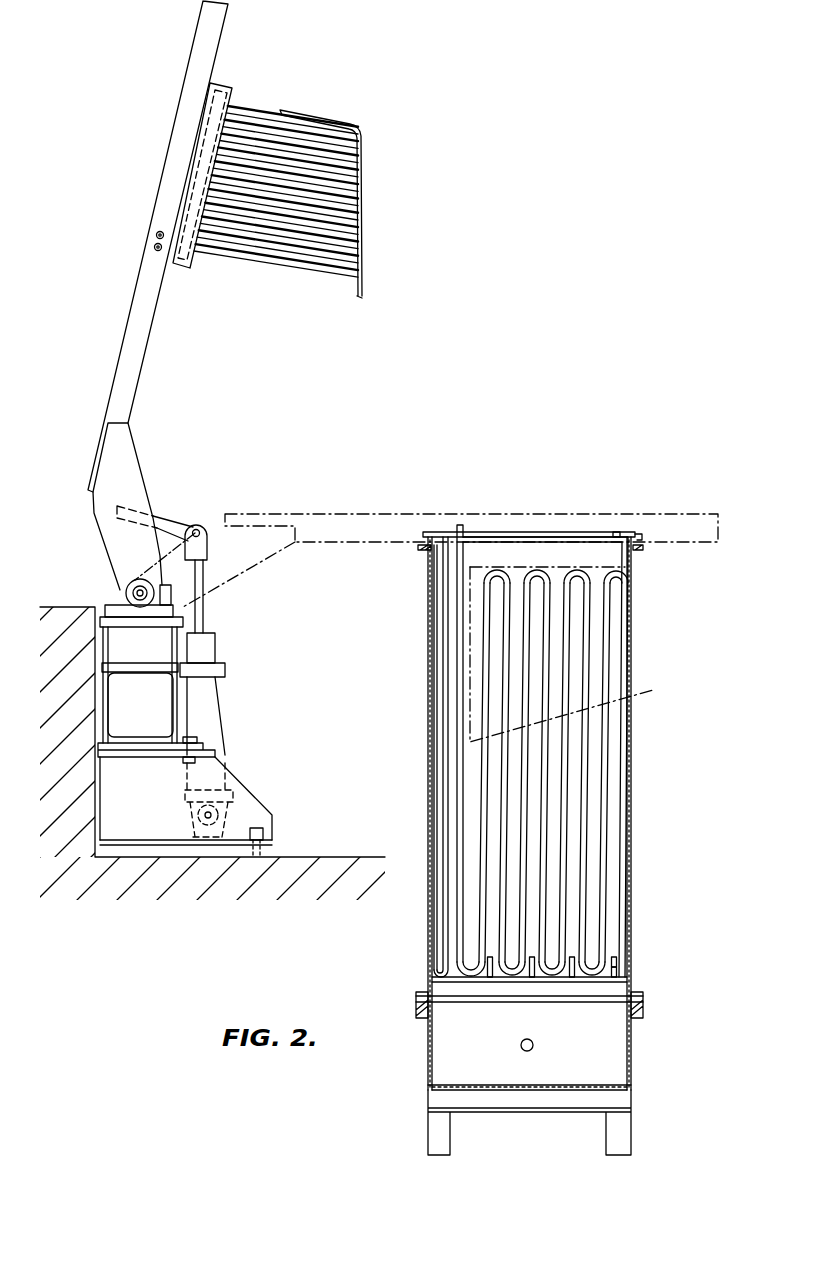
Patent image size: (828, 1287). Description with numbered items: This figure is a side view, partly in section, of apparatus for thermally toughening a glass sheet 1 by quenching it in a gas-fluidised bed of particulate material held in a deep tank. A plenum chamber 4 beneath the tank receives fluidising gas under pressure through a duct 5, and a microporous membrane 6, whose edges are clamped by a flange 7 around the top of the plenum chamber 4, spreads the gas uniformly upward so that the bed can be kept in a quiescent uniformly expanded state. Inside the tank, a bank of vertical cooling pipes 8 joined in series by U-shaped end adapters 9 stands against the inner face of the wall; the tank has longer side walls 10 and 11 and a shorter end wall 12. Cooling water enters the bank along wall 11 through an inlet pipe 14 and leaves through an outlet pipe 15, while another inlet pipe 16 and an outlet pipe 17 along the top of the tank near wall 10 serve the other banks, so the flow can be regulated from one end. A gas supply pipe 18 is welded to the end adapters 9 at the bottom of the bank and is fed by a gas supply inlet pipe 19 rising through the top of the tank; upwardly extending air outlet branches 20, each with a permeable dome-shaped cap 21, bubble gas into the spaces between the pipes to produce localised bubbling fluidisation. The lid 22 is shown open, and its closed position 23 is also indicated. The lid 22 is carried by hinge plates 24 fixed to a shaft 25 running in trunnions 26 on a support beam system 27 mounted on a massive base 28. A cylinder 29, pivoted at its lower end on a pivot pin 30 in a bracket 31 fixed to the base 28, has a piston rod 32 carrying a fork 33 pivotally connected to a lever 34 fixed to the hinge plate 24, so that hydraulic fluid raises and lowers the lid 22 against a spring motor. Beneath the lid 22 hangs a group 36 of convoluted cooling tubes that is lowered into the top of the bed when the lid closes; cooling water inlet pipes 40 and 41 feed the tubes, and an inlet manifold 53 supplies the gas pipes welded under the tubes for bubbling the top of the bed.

The glass sheet 1 is at (637, 998).
The plenum chamber 4 is at (629, 1075).
The duct 5 is at (533, 1048).
The microporous membrane 6 is at (577, 1003).
The flange 7 is at (637, 1012).
The vertical cooling pipes 8 is at (570, 654).
The U-shaped end adapters 9 is at (587, 573).
The side wall 10 is at (631, 805).
The side wall 11 is at (430, 765).
The end wall 12 is at (598, 588).
The inlet pipe 14 is at (450, 532).
The outlet pipe 15 is at (436, 532).
The inlet pipe 16 is at (617, 532).
The outlet pipe 17 is at (641, 532).
The gas supply pipe 18 is at (467, 980).
The gas supply inlet pipe 19 is at (451, 558).
The air outlet branches 20 is at (617, 973).
The dome-shaped cap 21 is at (617, 960).
The lid 22 is at (203, 36).
The closed position of the lid 23 is at (687, 527).
The hinge plates 24 is at (125, 477).
The shaft 25 is at (127, 590).
The trunnions 26 is at (120, 603).
The support beam system 27 is at (173, 703).
The base 28 is at (270, 853).
The cylinder 29 is at (213, 737).
The pivot pin 30 is at (193, 808).
The bracket 31 is at (195, 832).
The piston rod 32 is at (203, 620).
The fork 33 is at (208, 552).
The lever 34 is at (177, 527).
The group of cooling pipes 36 is at (370, 229).
The cooling water inlet pipe 40 is at (155, 248).
The cooling water inlet pipe 41 is at (157, 233).
The inlet manifold 53 is at (363, 182).